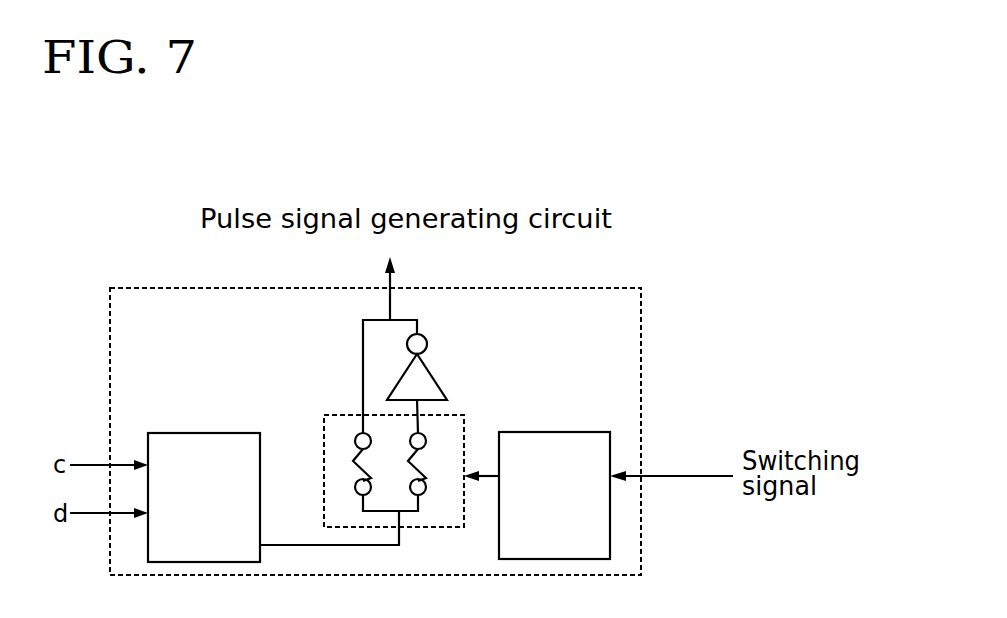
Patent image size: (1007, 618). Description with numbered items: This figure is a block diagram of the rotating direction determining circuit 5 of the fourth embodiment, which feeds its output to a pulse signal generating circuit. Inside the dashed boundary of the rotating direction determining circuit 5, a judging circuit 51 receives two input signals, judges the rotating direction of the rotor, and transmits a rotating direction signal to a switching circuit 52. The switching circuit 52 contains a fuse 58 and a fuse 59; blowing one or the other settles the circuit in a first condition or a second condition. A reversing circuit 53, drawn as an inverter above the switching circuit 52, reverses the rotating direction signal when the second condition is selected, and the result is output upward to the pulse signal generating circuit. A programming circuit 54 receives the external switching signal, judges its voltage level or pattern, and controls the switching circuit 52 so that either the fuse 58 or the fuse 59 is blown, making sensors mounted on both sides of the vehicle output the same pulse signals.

The rotating direction determining circuit 5 is at (218, 288).
The judging circuit 51 is at (191, 433).
The switching circuit 52 is at (457, 413).
The reversing circuit 53 is at (425, 365).
The programming circuit 54 is at (548, 432).
The fuse 58 is at (412, 466).
The fuse 59 is at (357, 466).